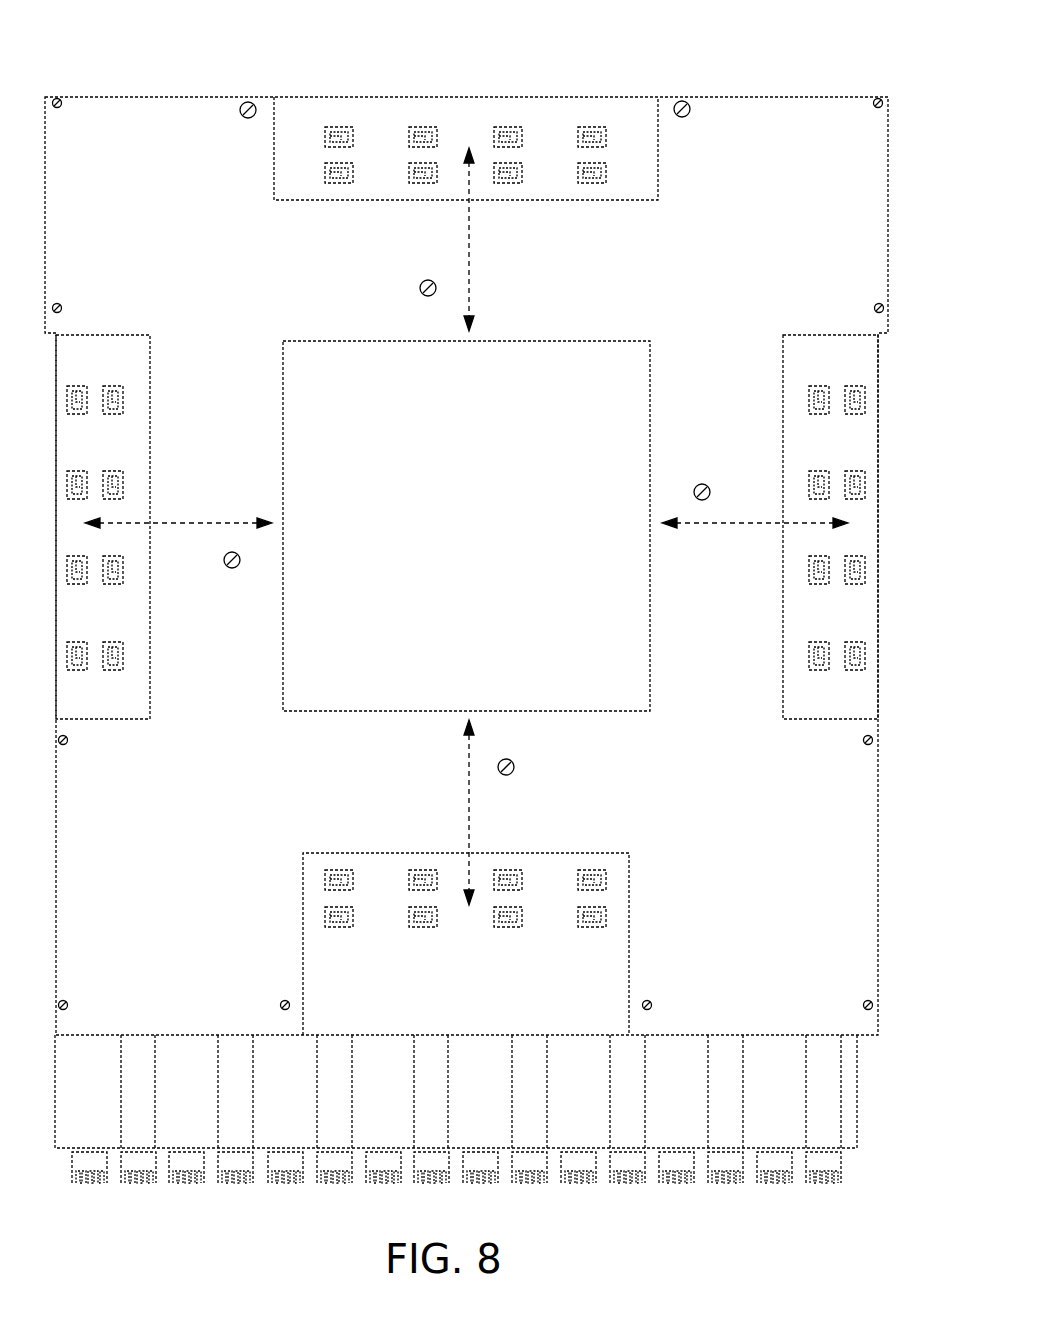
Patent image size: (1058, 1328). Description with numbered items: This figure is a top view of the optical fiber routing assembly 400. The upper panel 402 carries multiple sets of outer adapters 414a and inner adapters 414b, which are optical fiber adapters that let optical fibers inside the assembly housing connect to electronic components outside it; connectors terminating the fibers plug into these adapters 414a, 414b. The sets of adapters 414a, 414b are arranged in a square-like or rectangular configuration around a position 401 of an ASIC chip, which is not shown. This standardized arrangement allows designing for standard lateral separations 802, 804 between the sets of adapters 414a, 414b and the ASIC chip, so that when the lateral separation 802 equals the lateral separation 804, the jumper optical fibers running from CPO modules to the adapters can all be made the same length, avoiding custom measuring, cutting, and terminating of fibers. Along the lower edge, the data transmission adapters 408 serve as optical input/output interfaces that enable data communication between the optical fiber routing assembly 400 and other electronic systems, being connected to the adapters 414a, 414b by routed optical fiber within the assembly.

The optical fiber routing assembly 400 is at (506, 604).
The upper panel 402 is at (873, 197).
The position of an ASIC chip 401 is at (638, 685).
The outer adapters 414a is at (855, 386).
The inner adapters 414b is at (819, 672).
The lateral separation 802 is at (215, 522).
The lateral separation 804 is at (465, 778).
The data transmission adapters 408 is at (845, 1165).